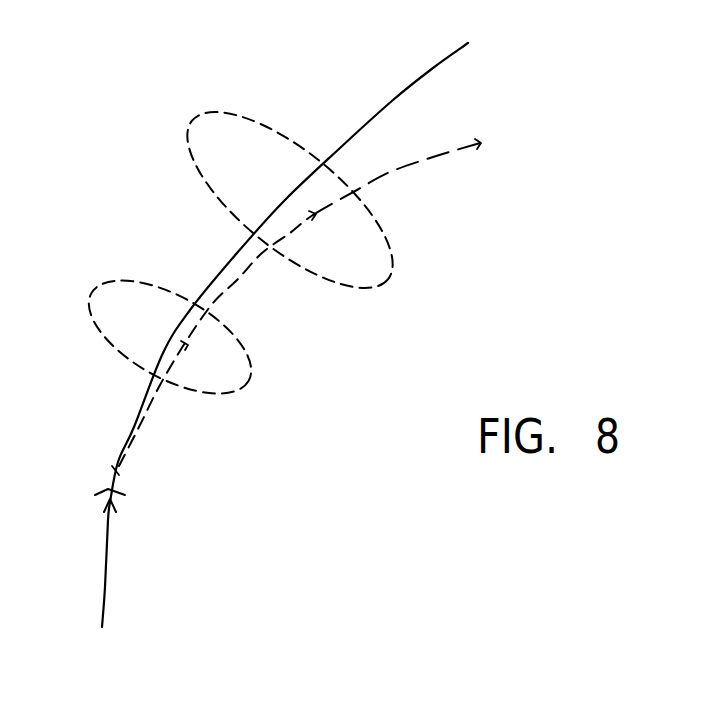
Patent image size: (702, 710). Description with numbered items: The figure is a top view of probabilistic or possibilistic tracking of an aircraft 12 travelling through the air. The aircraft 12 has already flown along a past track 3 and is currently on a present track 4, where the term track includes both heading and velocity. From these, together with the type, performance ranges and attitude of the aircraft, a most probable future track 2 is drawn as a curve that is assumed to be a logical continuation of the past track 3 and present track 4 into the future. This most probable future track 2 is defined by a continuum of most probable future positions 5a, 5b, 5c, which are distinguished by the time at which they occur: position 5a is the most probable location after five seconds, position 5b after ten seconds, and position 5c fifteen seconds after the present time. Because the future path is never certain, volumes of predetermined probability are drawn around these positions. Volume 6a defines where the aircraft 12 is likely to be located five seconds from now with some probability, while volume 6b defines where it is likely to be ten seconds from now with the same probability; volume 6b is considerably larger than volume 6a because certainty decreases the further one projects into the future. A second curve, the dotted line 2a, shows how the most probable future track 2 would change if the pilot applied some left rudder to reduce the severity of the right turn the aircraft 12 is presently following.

The most probable future track 2 is at (250, 274).
The dotted line 2a is at (384, 112).
The past track 3 is at (104, 602).
The present track 4 is at (114, 472).
The most probable future position 5a is at (188, 347).
The most probable future position 5b is at (317, 214).
The most probable future position 5c is at (479, 146).
The volume 6a is at (246, 368).
The volume 6b is at (397, 260).
The aircraft 12 is at (125, 495).